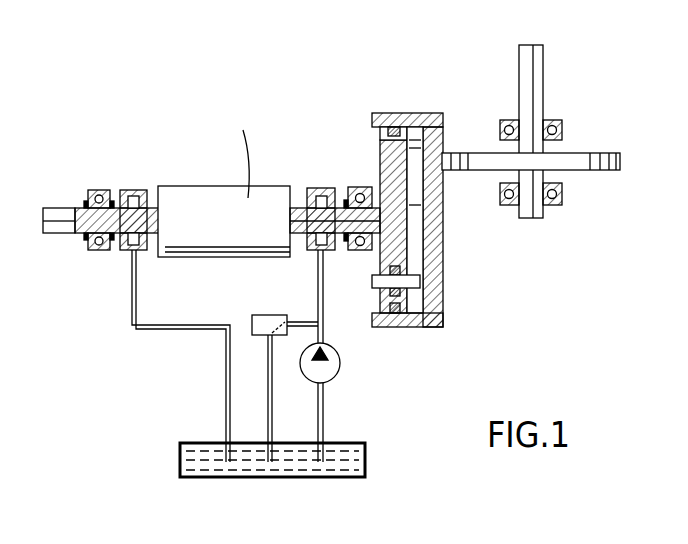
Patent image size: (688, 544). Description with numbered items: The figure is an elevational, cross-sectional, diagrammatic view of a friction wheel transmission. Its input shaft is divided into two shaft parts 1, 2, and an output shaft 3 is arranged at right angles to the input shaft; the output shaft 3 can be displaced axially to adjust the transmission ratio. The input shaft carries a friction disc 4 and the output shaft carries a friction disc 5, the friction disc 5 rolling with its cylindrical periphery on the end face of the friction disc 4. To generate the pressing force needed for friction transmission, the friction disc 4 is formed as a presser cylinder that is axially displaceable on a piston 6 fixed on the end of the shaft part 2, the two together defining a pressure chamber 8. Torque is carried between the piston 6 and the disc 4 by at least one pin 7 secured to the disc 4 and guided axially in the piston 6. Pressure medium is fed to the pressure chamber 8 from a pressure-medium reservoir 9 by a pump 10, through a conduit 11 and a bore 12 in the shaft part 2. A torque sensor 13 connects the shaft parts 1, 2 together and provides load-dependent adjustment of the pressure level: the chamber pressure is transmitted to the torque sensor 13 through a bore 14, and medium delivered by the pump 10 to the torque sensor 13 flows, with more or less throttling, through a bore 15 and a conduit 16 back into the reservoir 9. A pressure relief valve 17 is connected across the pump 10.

The shaft part 1 is at (60, 210).
The shaft part 2 is at (338, 207).
The output shaft 3 is at (531, 218).
The friction disc 4 is at (413, 318).
The friction disc 5 is at (484, 170).
The piston 6 is at (395, 143).
The pin 7 is at (410, 281).
The pressure chamber 8 is at (415, 147).
The pressure-medium reservoir 9 is at (345, 447).
The pump 10 is at (331, 366).
The conduit 11 is at (318, 292).
The bore 12 is at (391, 210).
The torque sensor 13 is at (208, 198).
The bore 14 is at (296, 200).
The bore 15 is at (151, 212).
The conduit 16 is at (172, 324).
The pressure relief valve 17 is at (258, 318).